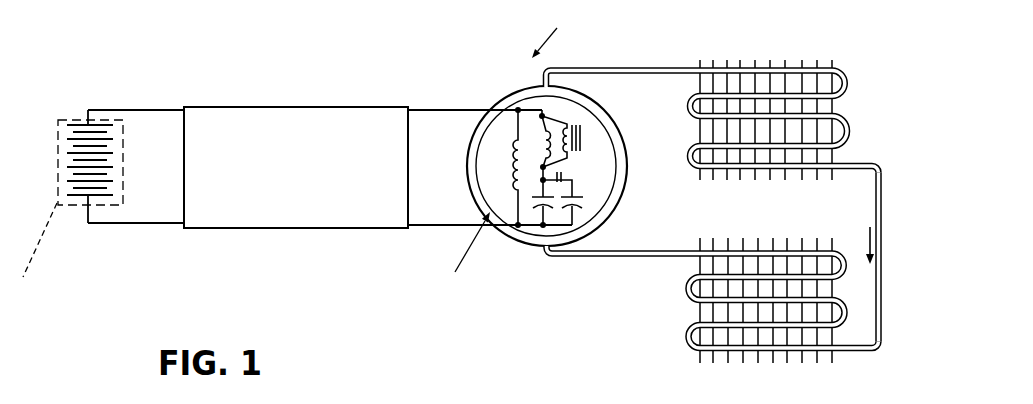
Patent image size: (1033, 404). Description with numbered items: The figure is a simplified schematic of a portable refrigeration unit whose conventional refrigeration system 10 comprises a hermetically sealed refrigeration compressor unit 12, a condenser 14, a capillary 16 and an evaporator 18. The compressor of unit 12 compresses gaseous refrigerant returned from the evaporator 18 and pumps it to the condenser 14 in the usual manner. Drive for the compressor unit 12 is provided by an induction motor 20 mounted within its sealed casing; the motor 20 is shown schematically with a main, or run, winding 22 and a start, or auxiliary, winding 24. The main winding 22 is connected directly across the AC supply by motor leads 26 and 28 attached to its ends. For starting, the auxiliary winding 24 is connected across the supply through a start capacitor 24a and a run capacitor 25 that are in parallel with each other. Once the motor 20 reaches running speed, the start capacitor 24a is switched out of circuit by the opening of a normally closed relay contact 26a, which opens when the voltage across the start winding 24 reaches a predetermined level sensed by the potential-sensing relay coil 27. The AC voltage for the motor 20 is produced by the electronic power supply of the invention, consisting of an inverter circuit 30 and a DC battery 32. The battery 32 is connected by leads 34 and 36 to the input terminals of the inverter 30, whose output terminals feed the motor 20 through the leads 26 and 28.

The refrigeration system 10 is at (558, 33).
The refrigeration compressor unit 12 is at (603, 227).
The condenser 14 is at (843, 72).
The capillary 16 is at (877, 208).
The evaporator 18 is at (692, 353).
The induction motor 20 is at (615, 170).
The main winding 22 is at (517, 157).
The start winding 24 is at (542, 116).
The start capacitor 24a is at (583, 200).
The run capacitor 25 is at (537, 207).
The motor lead 26 is at (443, 93).
The relay contact 26a is at (565, 173).
The relay coil 27 is at (567, 128).
The motor lead 28 is at (437, 227).
The inverter circuit 30 is at (265, 230).
The DC battery 32 is at (77, 207).
The lead 34 is at (157, 110).
The lead 36 is at (137, 223).